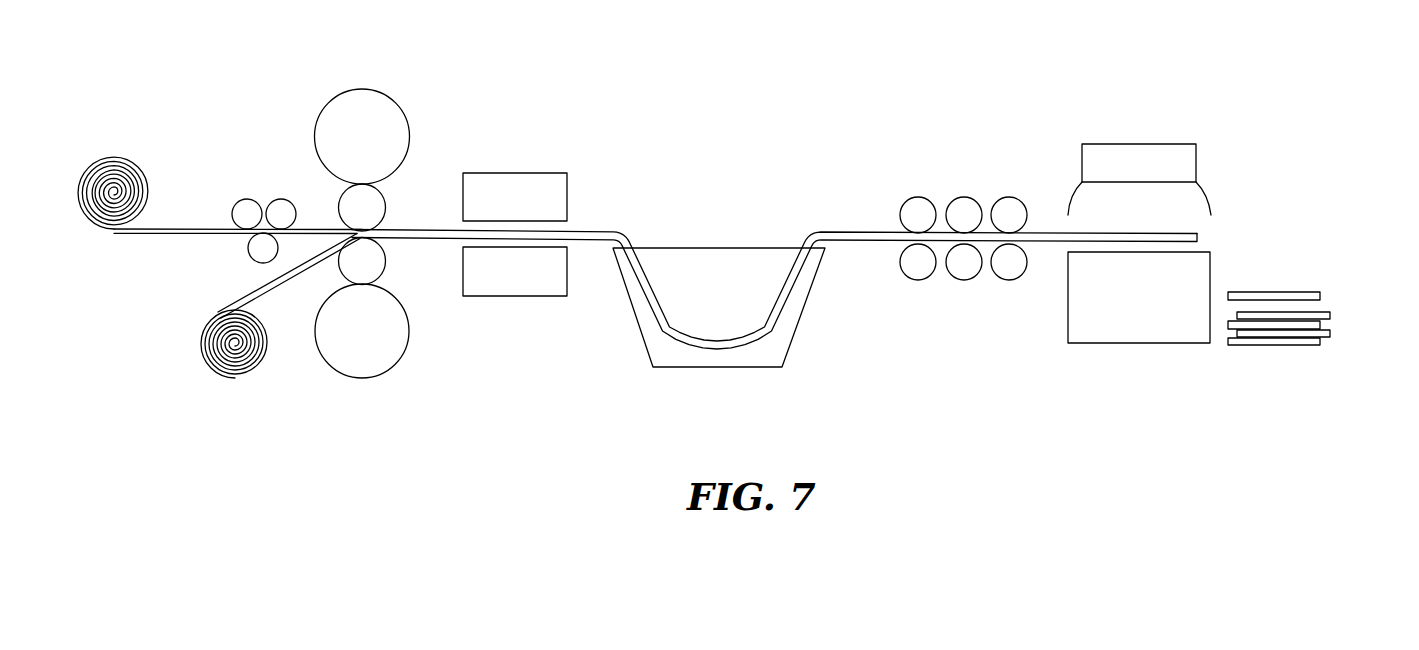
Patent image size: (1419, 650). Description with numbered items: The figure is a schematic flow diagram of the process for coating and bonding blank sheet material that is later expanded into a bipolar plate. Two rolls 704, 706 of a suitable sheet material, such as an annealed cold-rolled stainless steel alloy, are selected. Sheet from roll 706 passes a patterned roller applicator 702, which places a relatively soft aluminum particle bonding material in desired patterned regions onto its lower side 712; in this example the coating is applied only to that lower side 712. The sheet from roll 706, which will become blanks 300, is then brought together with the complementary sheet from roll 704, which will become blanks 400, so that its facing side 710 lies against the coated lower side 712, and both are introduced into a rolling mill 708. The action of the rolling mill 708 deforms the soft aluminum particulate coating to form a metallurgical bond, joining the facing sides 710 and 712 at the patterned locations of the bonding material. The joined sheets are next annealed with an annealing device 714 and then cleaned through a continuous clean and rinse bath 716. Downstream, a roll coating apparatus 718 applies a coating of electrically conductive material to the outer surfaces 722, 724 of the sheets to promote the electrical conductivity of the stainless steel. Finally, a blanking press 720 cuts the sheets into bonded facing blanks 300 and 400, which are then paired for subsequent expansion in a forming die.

The roll 706 is at (90, 183).
The lower side 712 is at (157, 234).
The patterned roller applicator 702 is at (240, 248).
The roll 704 is at (212, 345).
The facing side 710 is at (234, 304).
The rolling mill 708 is at (330, 80).
The annealing device 714 is at (511, 158).
The continuous clean and rinse bath 716 is at (712, 232).
The outer surface 724 is at (866, 233).
The outer surface 722 is at (873, 242).
The roll coating apparatus 718 is at (898, 195).
The blanking press 720 is at (1075, 137).
The blank 300 is at (1312, 292).
The blank 400 is at (1310, 310).